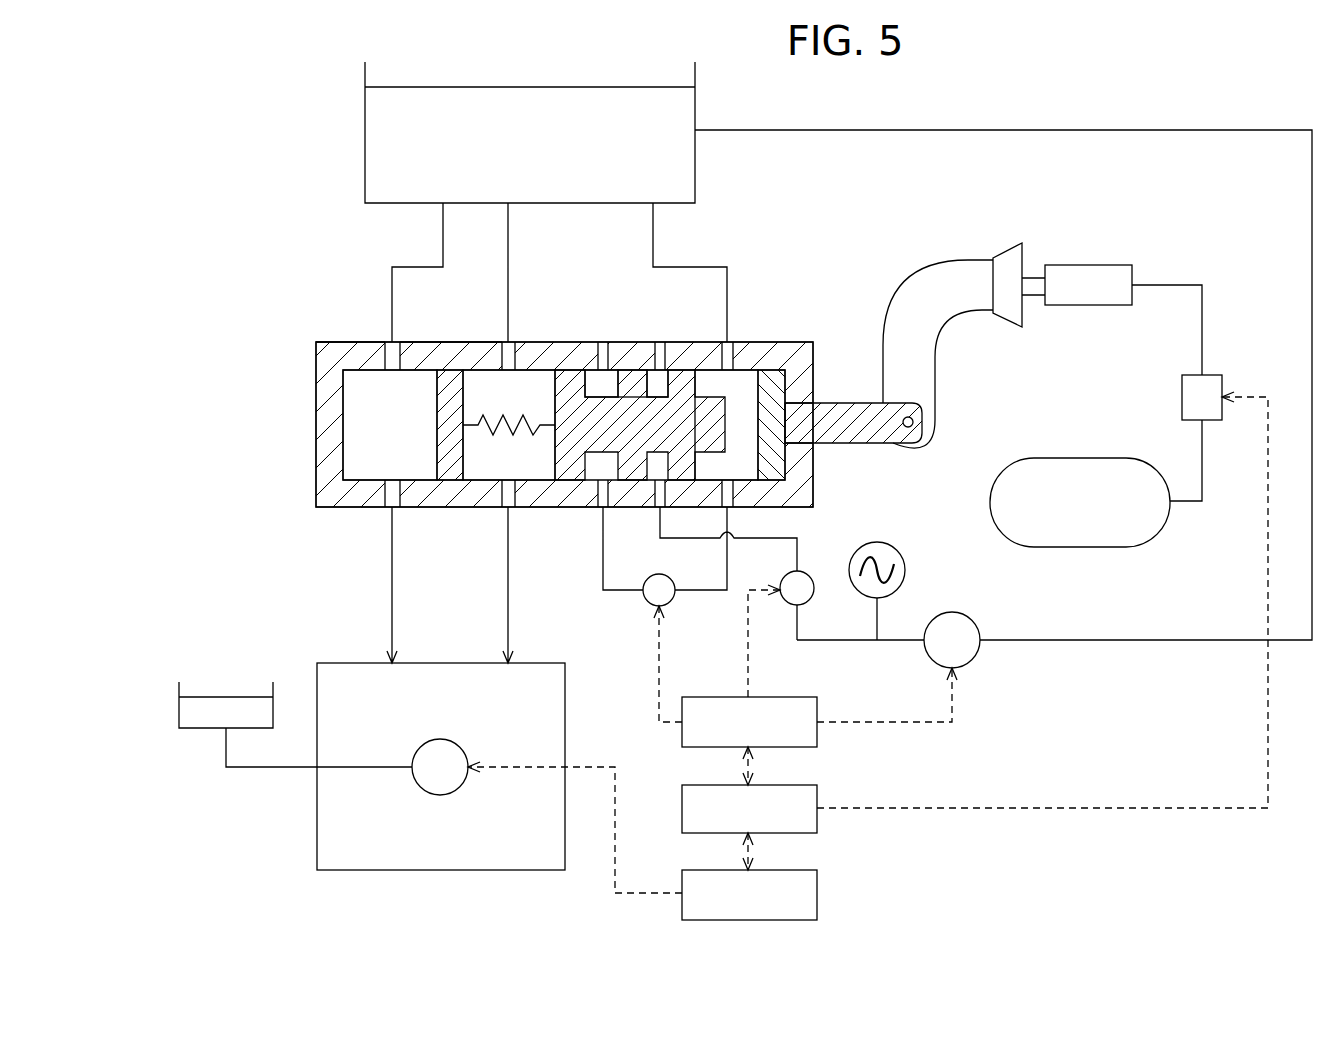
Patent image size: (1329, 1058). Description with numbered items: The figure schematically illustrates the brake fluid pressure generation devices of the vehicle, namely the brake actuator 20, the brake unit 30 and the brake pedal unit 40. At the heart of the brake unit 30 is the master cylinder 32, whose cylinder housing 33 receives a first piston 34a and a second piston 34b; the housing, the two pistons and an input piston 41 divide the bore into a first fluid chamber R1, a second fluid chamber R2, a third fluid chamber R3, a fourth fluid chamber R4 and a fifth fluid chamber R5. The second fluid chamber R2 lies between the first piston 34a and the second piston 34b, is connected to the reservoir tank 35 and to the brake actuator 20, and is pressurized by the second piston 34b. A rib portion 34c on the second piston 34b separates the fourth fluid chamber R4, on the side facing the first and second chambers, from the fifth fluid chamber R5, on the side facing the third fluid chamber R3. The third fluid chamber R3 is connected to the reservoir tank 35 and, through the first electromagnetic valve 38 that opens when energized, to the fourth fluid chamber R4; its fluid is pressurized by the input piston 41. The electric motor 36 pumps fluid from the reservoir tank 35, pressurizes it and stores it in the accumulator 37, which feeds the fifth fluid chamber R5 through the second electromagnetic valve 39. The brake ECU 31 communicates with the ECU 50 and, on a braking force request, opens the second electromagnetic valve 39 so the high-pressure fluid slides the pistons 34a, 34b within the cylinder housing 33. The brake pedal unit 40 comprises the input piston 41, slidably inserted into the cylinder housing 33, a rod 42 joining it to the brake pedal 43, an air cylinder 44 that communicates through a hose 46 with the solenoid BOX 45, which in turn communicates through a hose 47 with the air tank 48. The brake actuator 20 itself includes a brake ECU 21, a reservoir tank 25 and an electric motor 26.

The brake actuator 20 is at (315, 820).
The brake ECU 21 is at (817, 893).
The reservoir tank 25 is at (178, 695).
The electric motor 26 is at (450, 795).
The brake unit 30 is at (282, 410).
The brake ECU 31 is at (817, 738).
The master cylinder 32 is at (345, 340).
The cylinder housing 33 is at (312, 354).
The first piston 34a is at (457, 472).
The second piston 34b is at (575, 480).
The rib portion 34c is at (632, 385).
The reservoir tank 35 is at (387, 138).
The electric motor 36 is at (970, 660).
The accumulator 37 is at (896, 548).
The first electromagnetic valve 38 is at (648, 606).
The second electromagnetic valve 39 is at (812, 578).
The brake pedal unit 40 is at (942, 238).
The input piston 41 is at (772, 398).
The rod 42 is at (843, 420).
The brake pedal 43 is at (963, 288).
The air cylinder 44 is at (1088, 280).
The solenoid BOX 45 is at (1182, 397).
The hose 46 is at (1175, 285).
The hose 47 is at (1202, 468).
The air tank 48 is at (1105, 548).
The ECU 50 is at (817, 828).
The first fluid chamber R1 is at (371, 441).
The second fluid chamber R2 is at (490, 471).
The third fluid chamber R3 is at (728, 404).
The fourth fluid chamber R4 is at (604, 385).
The fifth fluid chamber R5 is at (657, 385).